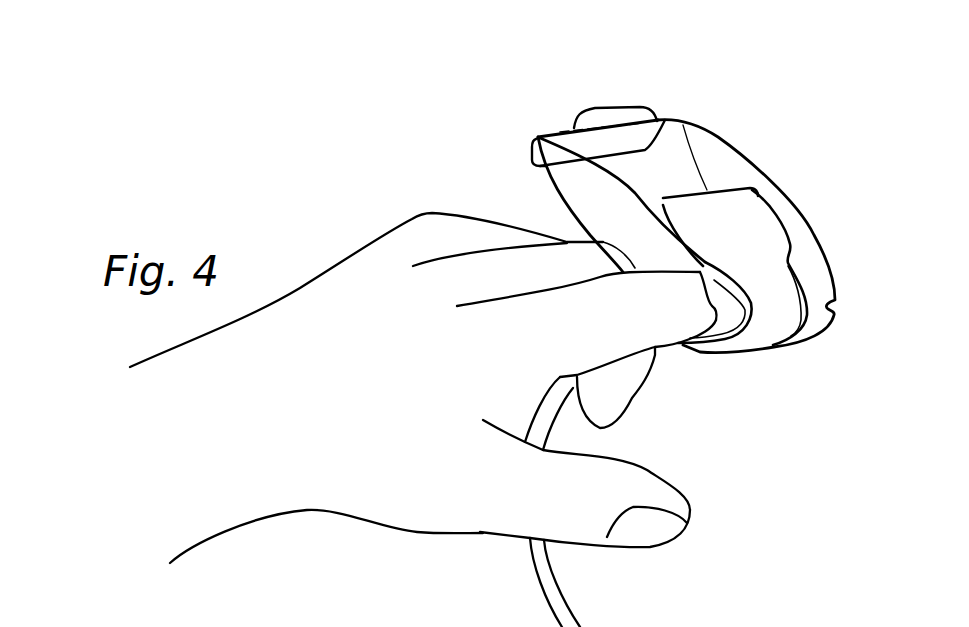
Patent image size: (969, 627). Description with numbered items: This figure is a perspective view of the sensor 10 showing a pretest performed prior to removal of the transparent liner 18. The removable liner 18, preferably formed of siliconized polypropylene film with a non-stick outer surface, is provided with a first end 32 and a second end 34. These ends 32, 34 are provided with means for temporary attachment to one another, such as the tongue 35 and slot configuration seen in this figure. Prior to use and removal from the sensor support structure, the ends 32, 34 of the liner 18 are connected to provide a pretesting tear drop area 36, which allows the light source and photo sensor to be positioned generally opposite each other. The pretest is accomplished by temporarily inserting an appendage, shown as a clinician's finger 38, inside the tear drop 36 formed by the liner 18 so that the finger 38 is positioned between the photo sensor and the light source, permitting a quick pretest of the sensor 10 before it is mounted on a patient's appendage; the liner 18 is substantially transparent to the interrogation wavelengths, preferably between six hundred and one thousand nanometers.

The sensor 10 is at (805, 185).
The removable liner 18 is at (737, 167).
The first end 32 is at (532, 158).
The second end 34 is at (648, 145).
The tongue 35 is at (620, 108).
The pretesting tear drop area 36 is at (621, 211).
The clinician's finger 38 is at (690, 322).